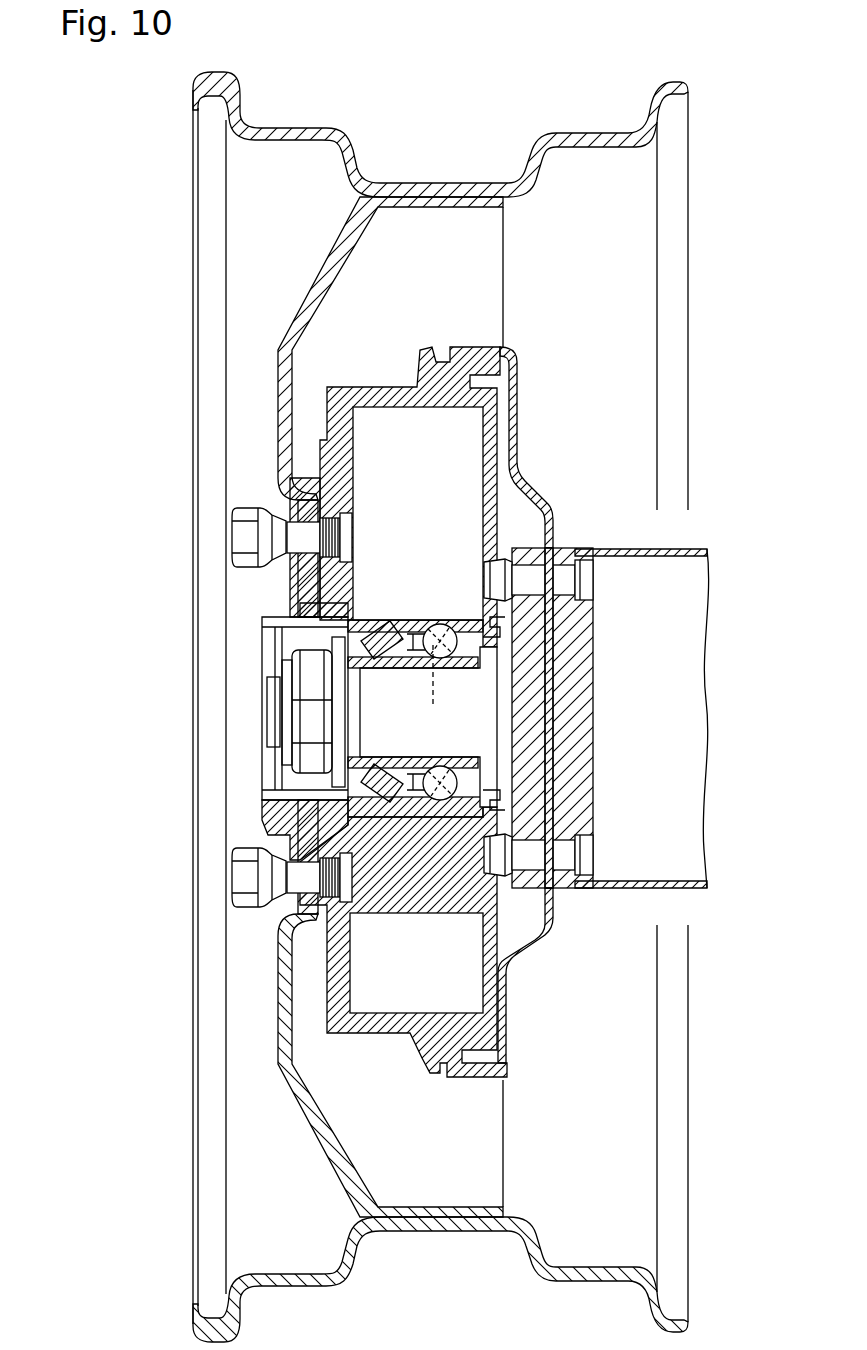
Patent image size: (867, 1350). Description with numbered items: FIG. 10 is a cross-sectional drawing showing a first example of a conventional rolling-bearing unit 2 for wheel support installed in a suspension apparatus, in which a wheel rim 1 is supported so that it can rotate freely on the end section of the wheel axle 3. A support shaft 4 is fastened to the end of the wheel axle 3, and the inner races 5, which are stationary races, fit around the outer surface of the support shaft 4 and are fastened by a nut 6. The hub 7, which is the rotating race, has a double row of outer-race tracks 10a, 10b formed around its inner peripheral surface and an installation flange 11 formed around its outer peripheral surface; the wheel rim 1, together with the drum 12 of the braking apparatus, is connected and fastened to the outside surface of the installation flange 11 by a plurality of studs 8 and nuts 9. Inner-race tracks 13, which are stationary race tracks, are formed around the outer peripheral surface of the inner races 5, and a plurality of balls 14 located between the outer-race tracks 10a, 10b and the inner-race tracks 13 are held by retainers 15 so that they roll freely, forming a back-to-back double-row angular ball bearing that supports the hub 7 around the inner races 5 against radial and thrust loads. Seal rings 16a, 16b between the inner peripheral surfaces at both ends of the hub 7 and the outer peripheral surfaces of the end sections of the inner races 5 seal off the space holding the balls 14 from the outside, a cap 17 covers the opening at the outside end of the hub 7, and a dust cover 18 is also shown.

The wheel rim 1 is at (366, 180).
The rolling-bearing unit 2 is at (330, 660).
The wheel axle 3 is at (623, 550).
The support shaft 4 is at (330, 690).
The inner race 5 is at (405, 770).
The nut 6 is at (300, 745).
The hub 7 is at (320, 595).
The stud 8 is at (297, 497).
The nut 9 is at (247, 542).
The outer-race track 10a is at (382, 623).
The outer-race track 10b is at (441, 625).
The installation flange 11 is at (323, 923).
The drum 12 is at (367, 1033).
The inner-race track 13 is at (383, 822).
The ball 14 is at (416, 677).
The retainer 15 is at (397, 668).
The seal ring 16a is at (300, 775).
The seal ring 16b is at (479, 772).
The cap 17 is at (300, 653).
The dust cover 18 is at (547, 930).